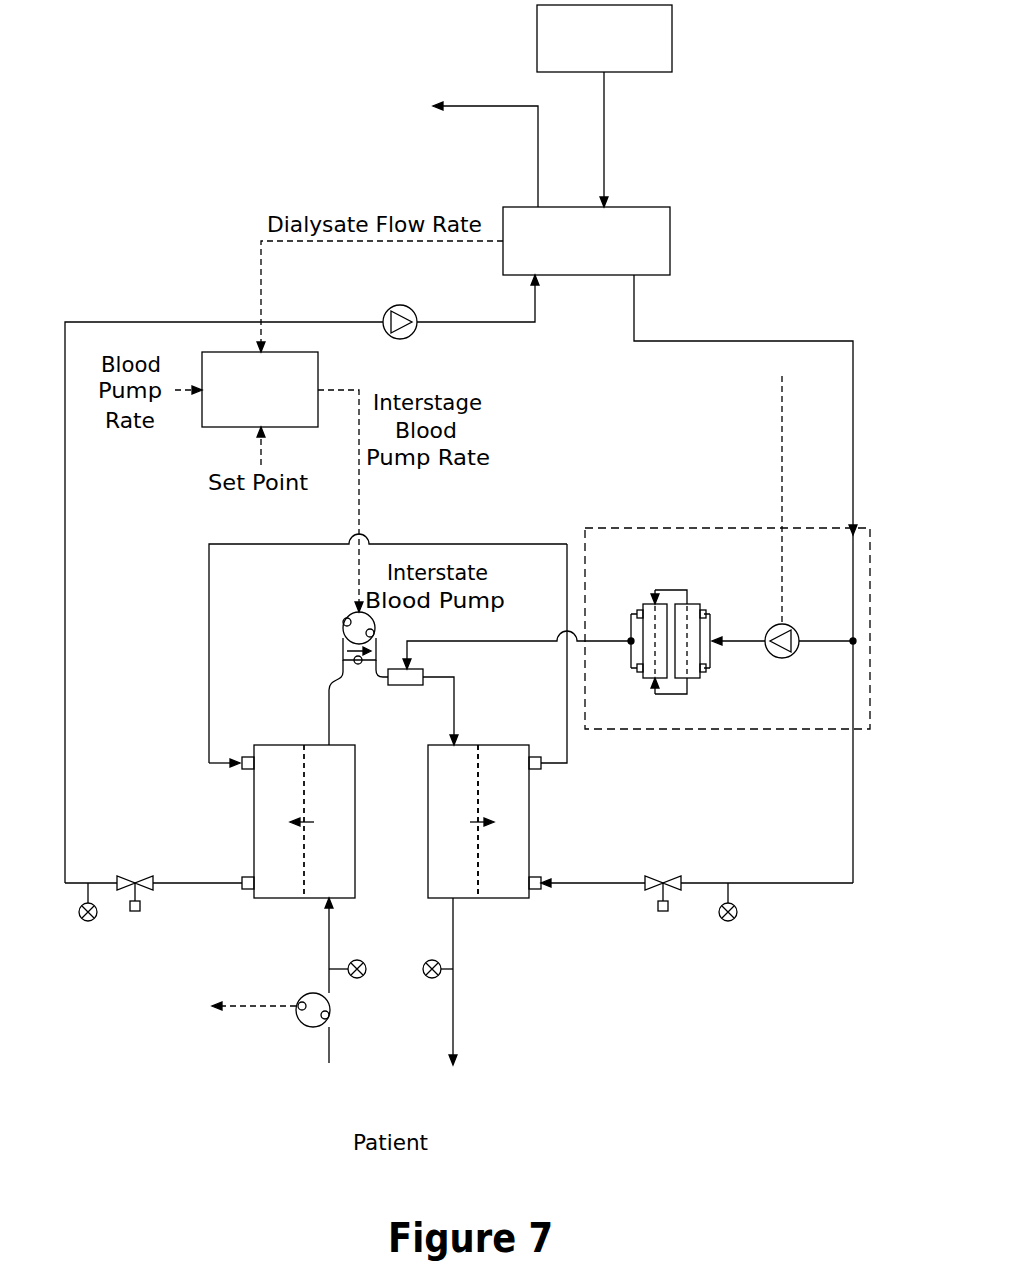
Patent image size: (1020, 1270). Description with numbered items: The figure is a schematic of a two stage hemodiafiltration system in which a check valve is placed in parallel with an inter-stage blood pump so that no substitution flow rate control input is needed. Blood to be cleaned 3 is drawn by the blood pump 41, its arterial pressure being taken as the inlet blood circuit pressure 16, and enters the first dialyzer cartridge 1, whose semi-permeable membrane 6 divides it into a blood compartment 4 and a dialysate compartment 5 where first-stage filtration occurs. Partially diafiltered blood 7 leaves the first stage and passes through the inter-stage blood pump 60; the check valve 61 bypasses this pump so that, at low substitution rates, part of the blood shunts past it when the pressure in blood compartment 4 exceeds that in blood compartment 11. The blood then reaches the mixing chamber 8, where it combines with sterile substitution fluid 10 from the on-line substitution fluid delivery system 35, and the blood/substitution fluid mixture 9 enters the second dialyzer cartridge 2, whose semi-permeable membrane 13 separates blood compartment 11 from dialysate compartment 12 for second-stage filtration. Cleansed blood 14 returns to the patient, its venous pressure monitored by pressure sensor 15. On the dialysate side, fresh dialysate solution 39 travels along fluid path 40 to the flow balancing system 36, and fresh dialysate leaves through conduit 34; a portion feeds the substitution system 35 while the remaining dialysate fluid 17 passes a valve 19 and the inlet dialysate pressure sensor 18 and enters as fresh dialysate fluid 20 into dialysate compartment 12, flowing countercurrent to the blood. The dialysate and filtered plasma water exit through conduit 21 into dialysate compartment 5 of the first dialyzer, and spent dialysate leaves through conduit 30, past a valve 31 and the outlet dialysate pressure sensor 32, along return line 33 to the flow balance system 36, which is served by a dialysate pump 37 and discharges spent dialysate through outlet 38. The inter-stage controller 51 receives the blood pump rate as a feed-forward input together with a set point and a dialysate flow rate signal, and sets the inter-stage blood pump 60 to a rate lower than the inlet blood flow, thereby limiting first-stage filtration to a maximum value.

The first dialyzer cartridge 1 is at (230, 821).
The second dialyzer cartridge 2 is at (572, 821).
The blood to be cleaned 3 is at (327, 926).
The blood compartment 4 is at (338, 866).
The dialysate compartment 5 is at (293, 866).
The semi-permeable membrane 6 is at (302, 779).
The partially diafiltered blood 7 is at (329, 700).
The mixing chamber 8 is at (418, 688).
The blood/substitution fluid mixture 9 is at (454, 706).
The sterile substitution fluid 10 is at (500, 645).
The blood compartment 11 is at (468, 880).
The dialysate compartment 12 is at (516, 880).
The semi-permeable membrane 13 is at (476, 777).
The cleansed blood 14 is at (455, 936).
The pressure sensor 15 is at (432, 958).
The inlet blood circuit pressure 16 is at (357, 958).
The remaining dialysate fluid 17 is at (853, 808).
The pressure sensor 18 is at (738, 912).
The dialysate inlet valve 19 is at (680, 878).
The fresh dialysate fluid 20 is at (600, 886).
The conduit 21 is at (567, 706).
The conduit 30 is at (220, 882).
The dialysate outlet valve 31 is at (152, 878).
The pressure sensor 32 is at (79, 911).
The spent dialysate return line 33 is at (65, 572).
The conduit 34 is at (853, 447).
The on-line substitution fluid delivery system 35 is at (628, 527).
The flow balancing system 36 is at (672, 226).
The dialysate pump 37 is at (418, 320).
The spent dialysate outlet line 38 is at (537, 140).
The fresh dialysate solution 39 is at (672, 14).
The fluid path 40 is at (608, 145).
The blood pump 41 is at (298, 998).
The inter-stage controller 51 is at (284, 428).
The inter-stage blood pump 60 is at (343, 634).
The check valve 61 is at (362, 666).